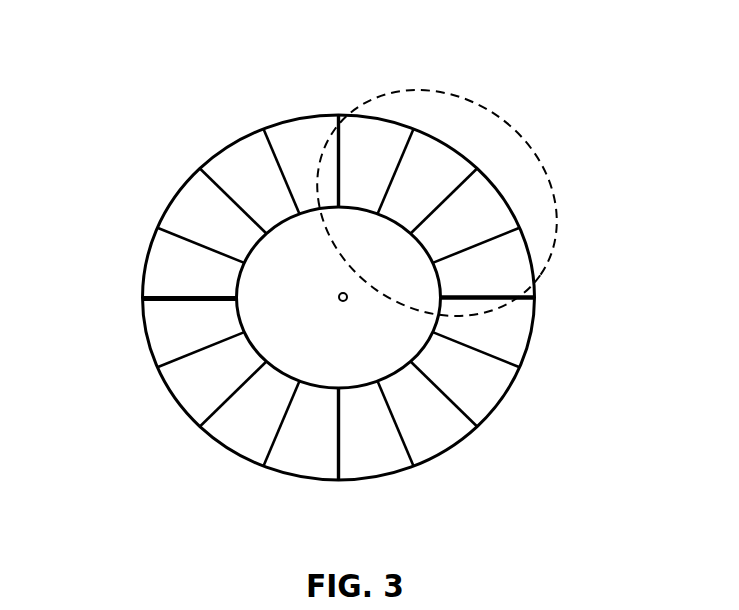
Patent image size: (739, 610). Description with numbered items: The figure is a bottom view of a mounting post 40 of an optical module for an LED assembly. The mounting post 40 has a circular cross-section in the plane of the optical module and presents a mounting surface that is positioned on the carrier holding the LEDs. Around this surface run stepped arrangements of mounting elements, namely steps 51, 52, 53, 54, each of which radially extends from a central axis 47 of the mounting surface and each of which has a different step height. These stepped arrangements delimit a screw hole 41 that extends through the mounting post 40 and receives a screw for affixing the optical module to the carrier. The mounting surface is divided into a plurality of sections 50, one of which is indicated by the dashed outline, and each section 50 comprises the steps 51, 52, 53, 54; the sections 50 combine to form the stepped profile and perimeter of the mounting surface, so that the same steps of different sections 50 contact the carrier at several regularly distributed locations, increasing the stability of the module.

The mounting post 40 is at (356, 556).
The screw hole 41 is at (277, 303).
The central axis 47 is at (339, 292).
The section 50 is at (545, 277).
The step 51 is at (378, 130).
The step 52 is at (438, 165).
The step 53 is at (485, 202).
The step 54 is at (517, 263).